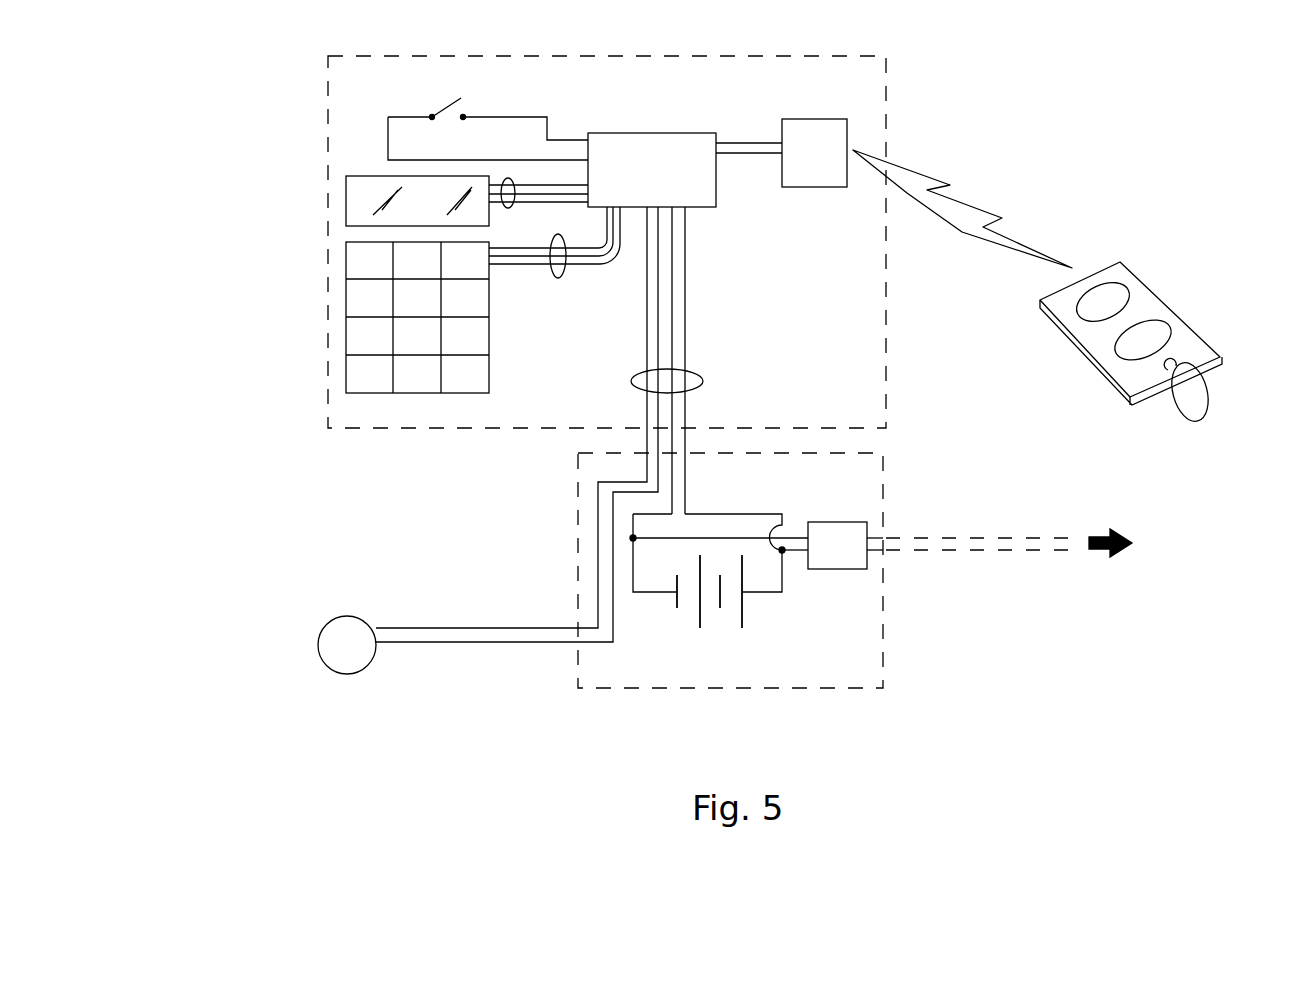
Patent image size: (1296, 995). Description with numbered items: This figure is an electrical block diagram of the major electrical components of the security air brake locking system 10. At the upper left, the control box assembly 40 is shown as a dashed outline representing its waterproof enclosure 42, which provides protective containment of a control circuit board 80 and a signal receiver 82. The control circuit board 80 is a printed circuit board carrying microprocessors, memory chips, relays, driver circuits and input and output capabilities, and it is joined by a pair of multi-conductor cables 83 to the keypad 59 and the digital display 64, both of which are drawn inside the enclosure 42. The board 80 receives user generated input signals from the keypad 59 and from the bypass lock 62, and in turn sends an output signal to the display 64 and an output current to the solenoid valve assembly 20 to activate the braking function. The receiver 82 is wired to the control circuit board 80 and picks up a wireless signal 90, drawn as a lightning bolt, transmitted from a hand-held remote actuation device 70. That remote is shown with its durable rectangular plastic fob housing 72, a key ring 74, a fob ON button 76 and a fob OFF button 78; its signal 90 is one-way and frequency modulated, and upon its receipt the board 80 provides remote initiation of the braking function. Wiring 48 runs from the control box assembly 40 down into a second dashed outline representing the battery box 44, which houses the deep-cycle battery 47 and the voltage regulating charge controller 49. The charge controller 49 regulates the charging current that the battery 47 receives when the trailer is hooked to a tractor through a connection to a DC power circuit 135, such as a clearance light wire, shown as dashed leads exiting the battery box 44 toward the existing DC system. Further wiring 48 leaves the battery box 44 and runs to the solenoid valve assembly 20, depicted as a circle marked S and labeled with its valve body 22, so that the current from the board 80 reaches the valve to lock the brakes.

The security air brake locking system 10 is at (375, 528).
The solenoid valve assembly 20 is at (325, 687).
The valve body 22 is at (372, 662).
The control box assembly 40 is at (300, 222).
The enclosure 42 is at (326, 125).
The battery box 44 is at (788, 687).
The battery 47 is at (692, 608).
The wiring 48 is at (703, 378).
The voltage regulating charge controller 49 is at (822, 570).
The keypad 59 is at (346, 322).
The bypass lock 62 is at (455, 112).
The digital display 64 is at (346, 193).
The remote actuation device 70 is at (1144, 329).
The fob housing 72 is at (1170, 298).
The key ring 74 is at (1210, 403).
The fob ON button 76 is at (1127, 302).
The fob OFF button 78 is at (1170, 332).
The control circuit board 80 is at (632, 132).
The receiver 82 is at (848, 128).
The multi-conductor cables 83 is at (511, 208).
The wireless signal 90 is at (980, 214).
The DC power circuit 135 is at (962, 550).